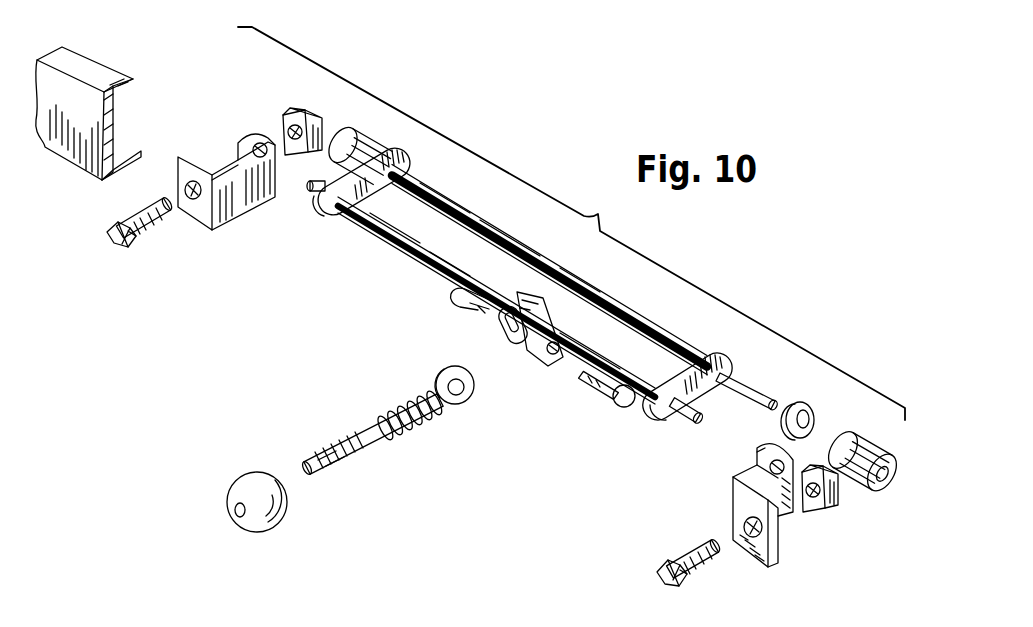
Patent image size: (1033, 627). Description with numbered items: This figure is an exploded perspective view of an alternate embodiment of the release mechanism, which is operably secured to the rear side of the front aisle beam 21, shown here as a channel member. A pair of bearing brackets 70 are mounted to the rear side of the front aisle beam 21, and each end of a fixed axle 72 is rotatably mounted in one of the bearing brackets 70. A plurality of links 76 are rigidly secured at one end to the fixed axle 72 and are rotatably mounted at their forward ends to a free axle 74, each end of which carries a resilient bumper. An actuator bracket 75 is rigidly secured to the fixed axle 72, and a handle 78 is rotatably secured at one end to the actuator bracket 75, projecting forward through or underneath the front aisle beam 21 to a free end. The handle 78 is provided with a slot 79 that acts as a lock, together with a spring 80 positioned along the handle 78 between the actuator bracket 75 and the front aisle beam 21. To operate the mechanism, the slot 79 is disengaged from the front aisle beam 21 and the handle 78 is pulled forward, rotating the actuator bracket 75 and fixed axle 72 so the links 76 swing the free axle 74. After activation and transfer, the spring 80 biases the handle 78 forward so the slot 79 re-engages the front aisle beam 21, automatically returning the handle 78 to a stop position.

The front aisle beam 21 is at (87, 54).
The bearing brackets 70 is at (200, 213).
The fixed axle 72 is at (410, 252).
The free axle 74 is at (468, 220).
The actuator bracket 75 is at (537, 358).
The links 76 is at (400, 153).
The handle 78 is at (372, 450).
The slot 79 is at (376, 438).
The spring 80 is at (420, 402).